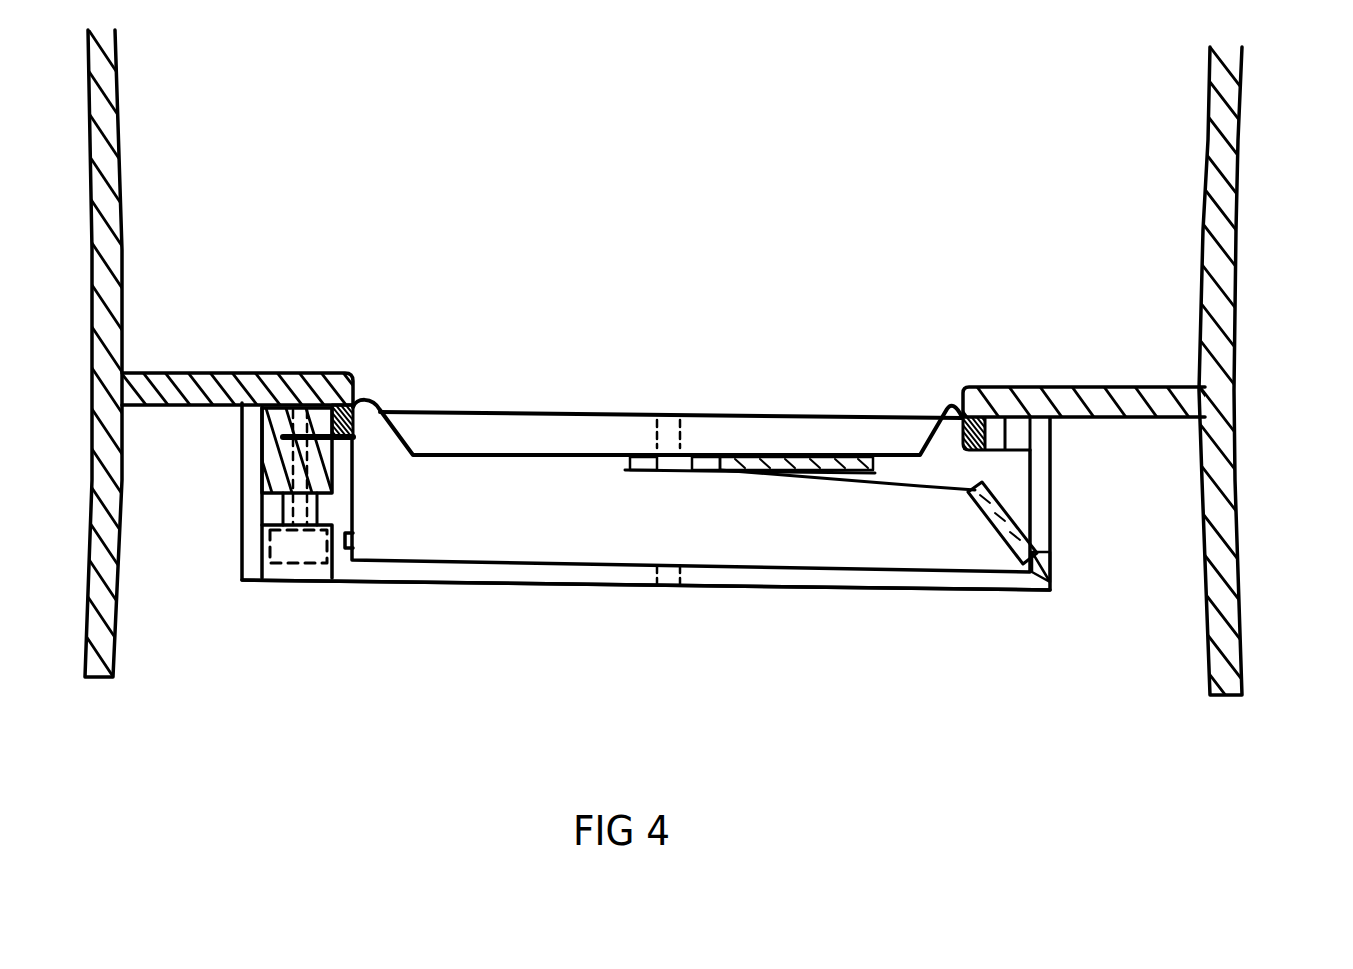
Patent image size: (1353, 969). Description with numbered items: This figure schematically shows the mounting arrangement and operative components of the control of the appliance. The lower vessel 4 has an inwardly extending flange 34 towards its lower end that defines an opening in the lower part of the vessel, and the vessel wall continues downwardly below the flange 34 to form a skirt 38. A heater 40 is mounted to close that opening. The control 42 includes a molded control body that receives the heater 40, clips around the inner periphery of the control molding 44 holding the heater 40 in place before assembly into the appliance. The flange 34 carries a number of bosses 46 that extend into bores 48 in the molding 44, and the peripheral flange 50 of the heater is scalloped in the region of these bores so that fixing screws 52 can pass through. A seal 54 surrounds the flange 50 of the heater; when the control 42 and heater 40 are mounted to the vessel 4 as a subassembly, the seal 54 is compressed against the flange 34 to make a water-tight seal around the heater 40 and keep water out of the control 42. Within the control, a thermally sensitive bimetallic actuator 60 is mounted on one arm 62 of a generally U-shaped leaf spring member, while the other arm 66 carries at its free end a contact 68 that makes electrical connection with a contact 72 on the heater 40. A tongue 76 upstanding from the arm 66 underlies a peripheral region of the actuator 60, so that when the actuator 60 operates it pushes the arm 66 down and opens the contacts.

The lower vessel 4 is at (1262, 91).
The inwardly extending flange 34 is at (203, 373).
The skirt 38 is at (1237, 478).
The heater 40 is at (432, 420).
The control 42 is at (524, 602).
The control molding 44 is at (908, 582).
The bosses 46 is at (283, 428).
The bores 48 is at (262, 493).
The peripheral flange of the heater 50 is at (300, 410).
The fixing screws 52 is at (305, 553).
The seal 54 is at (332, 407).
The thermally sensitive bimetallic actuator 60 is at (710, 452).
The arm of the leaf spring member 62 is at (872, 455).
The other arm of the leaf spring member 66 is at (690, 472).
The contact 68 is at (635, 470).
The contact on the heater 72 is at (637, 452).
The tongue 76 is at (678, 452).